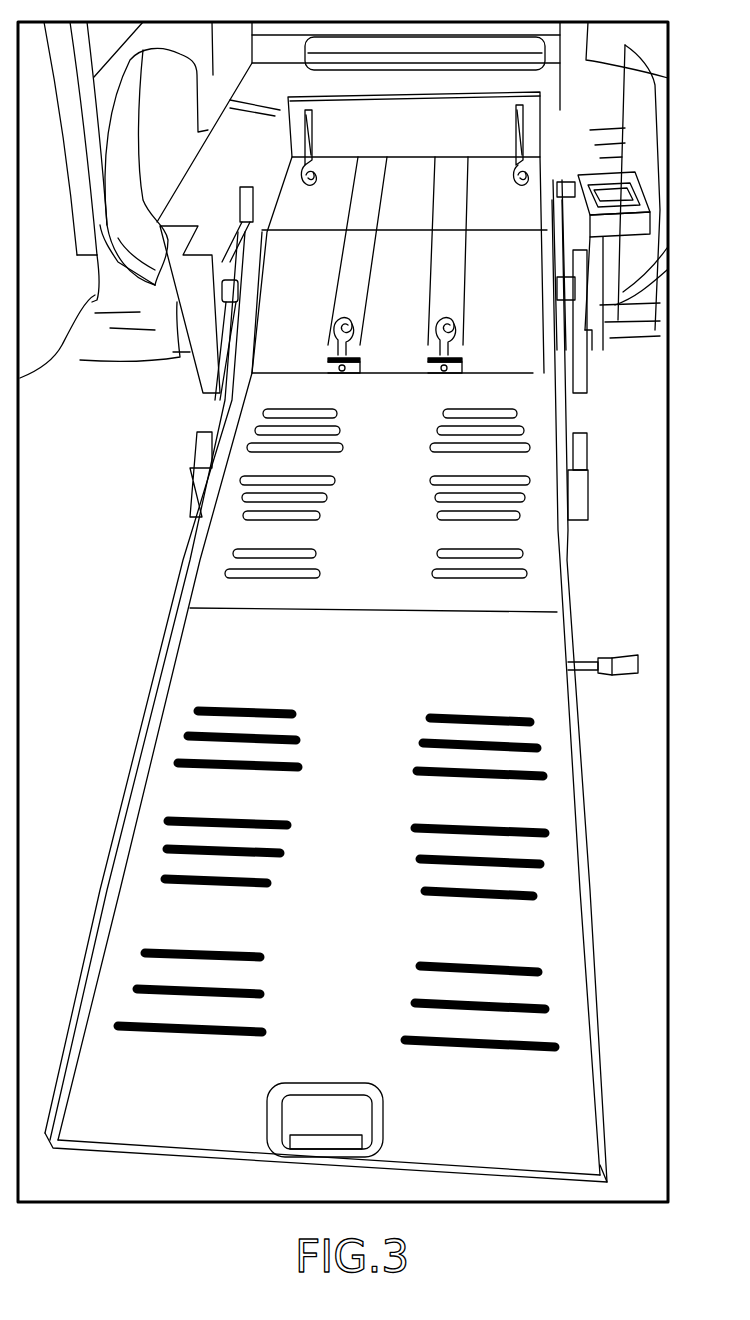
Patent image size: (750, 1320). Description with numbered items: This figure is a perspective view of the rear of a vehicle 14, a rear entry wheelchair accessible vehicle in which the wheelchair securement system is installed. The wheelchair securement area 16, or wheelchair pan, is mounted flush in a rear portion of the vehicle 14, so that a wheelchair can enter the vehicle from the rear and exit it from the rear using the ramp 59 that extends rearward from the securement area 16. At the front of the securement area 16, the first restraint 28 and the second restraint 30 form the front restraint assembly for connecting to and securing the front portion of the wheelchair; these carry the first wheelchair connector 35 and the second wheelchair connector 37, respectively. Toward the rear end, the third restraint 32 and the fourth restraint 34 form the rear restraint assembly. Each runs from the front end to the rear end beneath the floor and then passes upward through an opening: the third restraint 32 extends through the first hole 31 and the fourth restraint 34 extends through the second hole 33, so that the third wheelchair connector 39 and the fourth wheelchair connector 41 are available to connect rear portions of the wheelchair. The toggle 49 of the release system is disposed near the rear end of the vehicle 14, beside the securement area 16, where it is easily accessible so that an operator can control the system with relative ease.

The vehicle 14 is at (660, 335).
The wheelchair securement area 16 is at (272, 278).
The first restraint 28 is at (312, 145).
The second restraint 30 is at (518, 148).
The first hole 31 is at (352, 374).
The third restraint 32 is at (342, 360).
The second hole 33 is at (446, 374).
The fourth restraint 34 is at (450, 357).
The first wheelchair connector 35 is at (306, 185).
The second wheelchair connector 37 is at (520, 185).
The third wheelchair connector 39 is at (342, 312).
The fourth wheelchair connector 41 is at (446, 312).
The toggle 49 is at (630, 222).
The ramp 59 is at (540, 922).